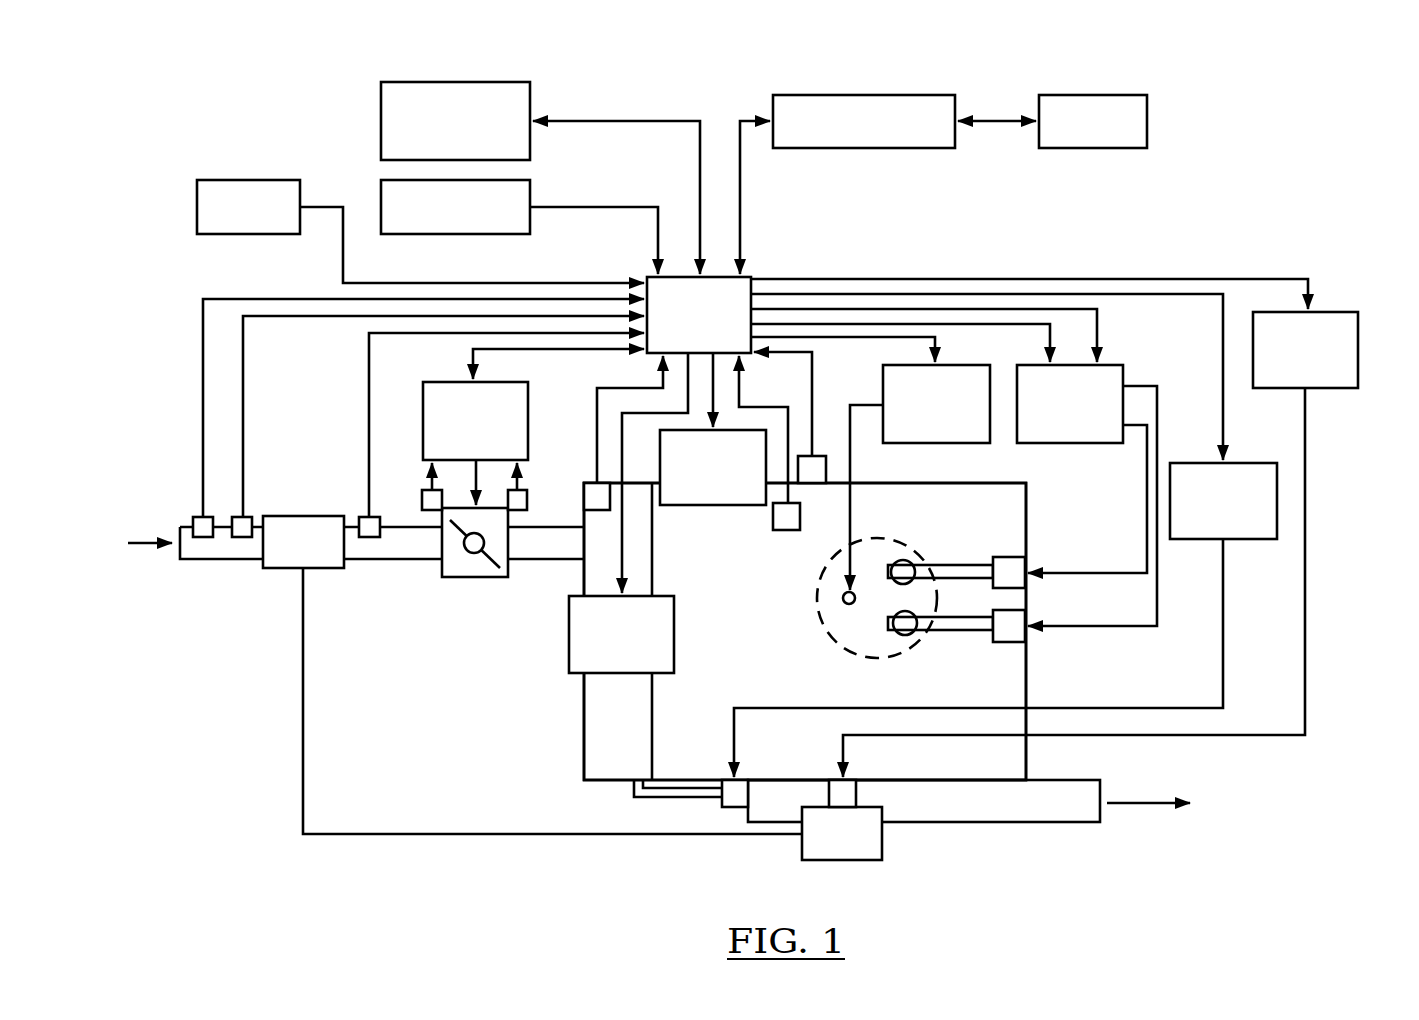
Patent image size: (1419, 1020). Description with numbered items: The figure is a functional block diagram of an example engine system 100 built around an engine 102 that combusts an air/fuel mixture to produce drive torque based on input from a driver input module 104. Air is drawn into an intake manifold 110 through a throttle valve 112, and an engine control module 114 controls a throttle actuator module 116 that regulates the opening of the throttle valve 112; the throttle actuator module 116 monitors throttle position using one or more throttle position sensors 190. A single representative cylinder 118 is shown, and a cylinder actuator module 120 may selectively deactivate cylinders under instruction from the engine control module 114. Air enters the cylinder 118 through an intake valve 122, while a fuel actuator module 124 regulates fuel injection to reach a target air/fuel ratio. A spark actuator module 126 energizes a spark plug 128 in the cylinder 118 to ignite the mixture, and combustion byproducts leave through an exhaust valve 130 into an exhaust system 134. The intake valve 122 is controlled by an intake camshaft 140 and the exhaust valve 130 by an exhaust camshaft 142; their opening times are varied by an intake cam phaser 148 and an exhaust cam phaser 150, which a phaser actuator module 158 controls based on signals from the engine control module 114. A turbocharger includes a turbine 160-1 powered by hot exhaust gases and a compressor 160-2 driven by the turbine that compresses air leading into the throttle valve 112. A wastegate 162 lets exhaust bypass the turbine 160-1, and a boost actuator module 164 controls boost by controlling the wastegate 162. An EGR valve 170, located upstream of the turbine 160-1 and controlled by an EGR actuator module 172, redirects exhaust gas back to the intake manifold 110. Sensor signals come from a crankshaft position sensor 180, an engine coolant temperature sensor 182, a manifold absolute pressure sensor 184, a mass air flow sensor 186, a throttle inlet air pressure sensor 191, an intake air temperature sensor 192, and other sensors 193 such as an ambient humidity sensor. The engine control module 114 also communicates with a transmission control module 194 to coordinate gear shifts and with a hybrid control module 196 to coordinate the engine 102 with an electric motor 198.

The engine system 100 is at (237, 99).
The engine 102 is at (1027, 508).
The driver input module 104 is at (381, 183).
The intake manifold 110 is at (584, 748).
The throttle valve 112 is at (472, 578).
The engine control module 114 is at (751, 277).
The throttle actuator module 116 is at (423, 400).
The cylinder 118 is at (825, 632).
The cylinder actuator module 120 is at (683, 506).
The intake valve 122 is at (903, 560).
The fuel actuator module 124 is at (569, 650).
The spark actuator module 126 is at (943, 443).
The spark plug 128 is at (843, 600).
The exhaust valve 130 is at (905, 636).
The exhaust system 134 is at (1052, 826).
The intake camshaft 140 is at (960, 565).
The exhaust camshaft 142 is at (962, 631).
The intake cam phaser 148 is at (1010, 557).
The exhaust cam phaser 150 is at (1010, 643).
The phaser actuator module 158 is at (1123, 365).
The turbine 160-1 is at (882, 850).
The compressor 160-2 is at (283, 570).
The wastegate 162 is at (829, 794).
The boost actuator module 164 is at (1335, 312).
The EGR valve 170 is at (735, 808).
The EGR actuator module 172 is at (1200, 540).
The crankshaft position sensor 180 is at (820, 456).
The engine coolant temperature sensor 182 is at (773, 520).
The manifold absolute pressure sensor 184 is at (590, 490).
The mass air flow sensor 186 is at (243, 517).
The throttle position sensor 190 is at (422, 500).
The throttle inlet air pressure sensor 191 is at (369, 517).
The intake air temperature sensor 192 is at (200, 517).
The other sensors 193 is at (232, 180).
The transmission control module 194 is at (381, 100).
The hybrid control module 196 is at (829, 95).
The electric motor 198 is at (1096, 95).